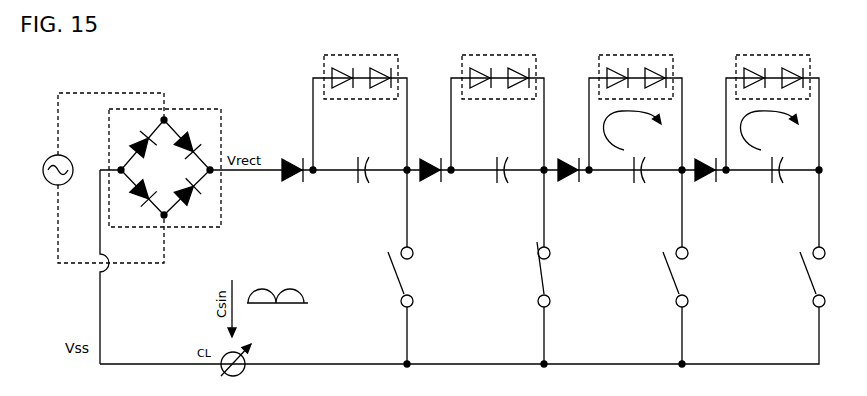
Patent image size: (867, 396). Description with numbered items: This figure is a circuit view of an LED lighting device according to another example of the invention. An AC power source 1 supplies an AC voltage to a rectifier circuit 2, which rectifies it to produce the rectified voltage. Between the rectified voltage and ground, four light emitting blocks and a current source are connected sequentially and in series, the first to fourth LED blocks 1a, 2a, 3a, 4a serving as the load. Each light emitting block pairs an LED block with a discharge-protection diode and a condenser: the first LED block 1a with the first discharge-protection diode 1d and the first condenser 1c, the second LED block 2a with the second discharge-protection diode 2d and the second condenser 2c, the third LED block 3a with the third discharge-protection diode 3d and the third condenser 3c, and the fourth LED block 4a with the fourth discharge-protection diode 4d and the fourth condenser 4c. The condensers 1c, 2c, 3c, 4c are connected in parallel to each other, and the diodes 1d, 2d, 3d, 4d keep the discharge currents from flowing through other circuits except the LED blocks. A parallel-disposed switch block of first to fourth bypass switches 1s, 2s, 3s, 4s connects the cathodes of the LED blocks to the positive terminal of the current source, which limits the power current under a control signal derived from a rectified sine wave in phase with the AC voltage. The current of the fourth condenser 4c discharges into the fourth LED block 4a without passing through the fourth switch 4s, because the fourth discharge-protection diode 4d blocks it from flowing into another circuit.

The AC power source 1 is at (68, 153).
The rectifier circuit 2 is at (173, 103).
The first LED block 1a is at (348, 77).
The first condenser 1c is at (366, 160).
The first discharge-protection diode 1d is at (295, 181).
The first bypass switch 1s is at (392, 277).
The second LED block 2a is at (486, 77).
The second condenser 2c is at (504, 160).
The second discharge-protection diode 2d is at (433, 181).
The second bypass switch 2s is at (533, 274).
The third LED block 3a is at (623, 77).
The third condenser 3c is at (644, 161).
The third discharge-protection diode 3d is at (570, 181).
The third bypass switch 3s is at (666, 277).
The fourth LED block 4a is at (760, 77).
The fourth condenser 4c is at (779, 161).
The fourth discharge-protection diode 4d is at (707, 181).
The fourth bypass switch 4s is at (803, 277).